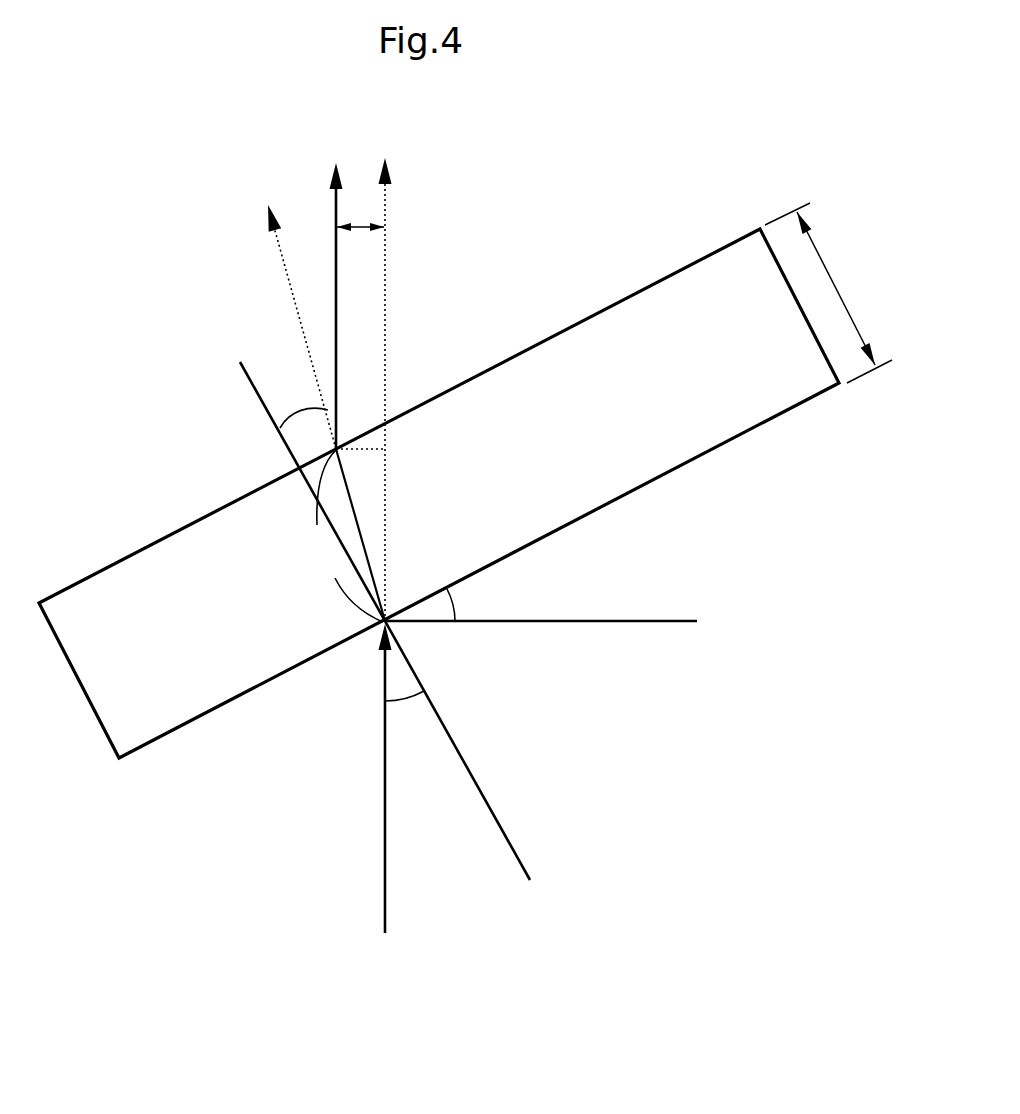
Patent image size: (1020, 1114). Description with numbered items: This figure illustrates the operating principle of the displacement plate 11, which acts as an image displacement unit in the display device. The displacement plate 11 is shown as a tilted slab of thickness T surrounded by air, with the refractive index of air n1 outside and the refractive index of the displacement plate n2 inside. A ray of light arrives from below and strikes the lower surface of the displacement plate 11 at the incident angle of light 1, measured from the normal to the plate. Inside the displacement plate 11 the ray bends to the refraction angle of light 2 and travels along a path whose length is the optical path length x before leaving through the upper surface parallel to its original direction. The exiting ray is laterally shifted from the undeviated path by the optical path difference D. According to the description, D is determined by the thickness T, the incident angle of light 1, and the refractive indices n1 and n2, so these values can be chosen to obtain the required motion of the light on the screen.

The displacement plate 11 is at (545, 368).
The length of the optical path of the refracted light x is at (348, 535).
The optical path difference D is at (360, 212).
The thickness of the displacement plate T is at (828, 293).
The incident angle of light 1 is at (443, 665).
The refraction angle of light 2 is at (304, 405).
The refractive index of air n1 is at (156, 803).
The refractive index of the displacement plate n2 is at (136, 708).